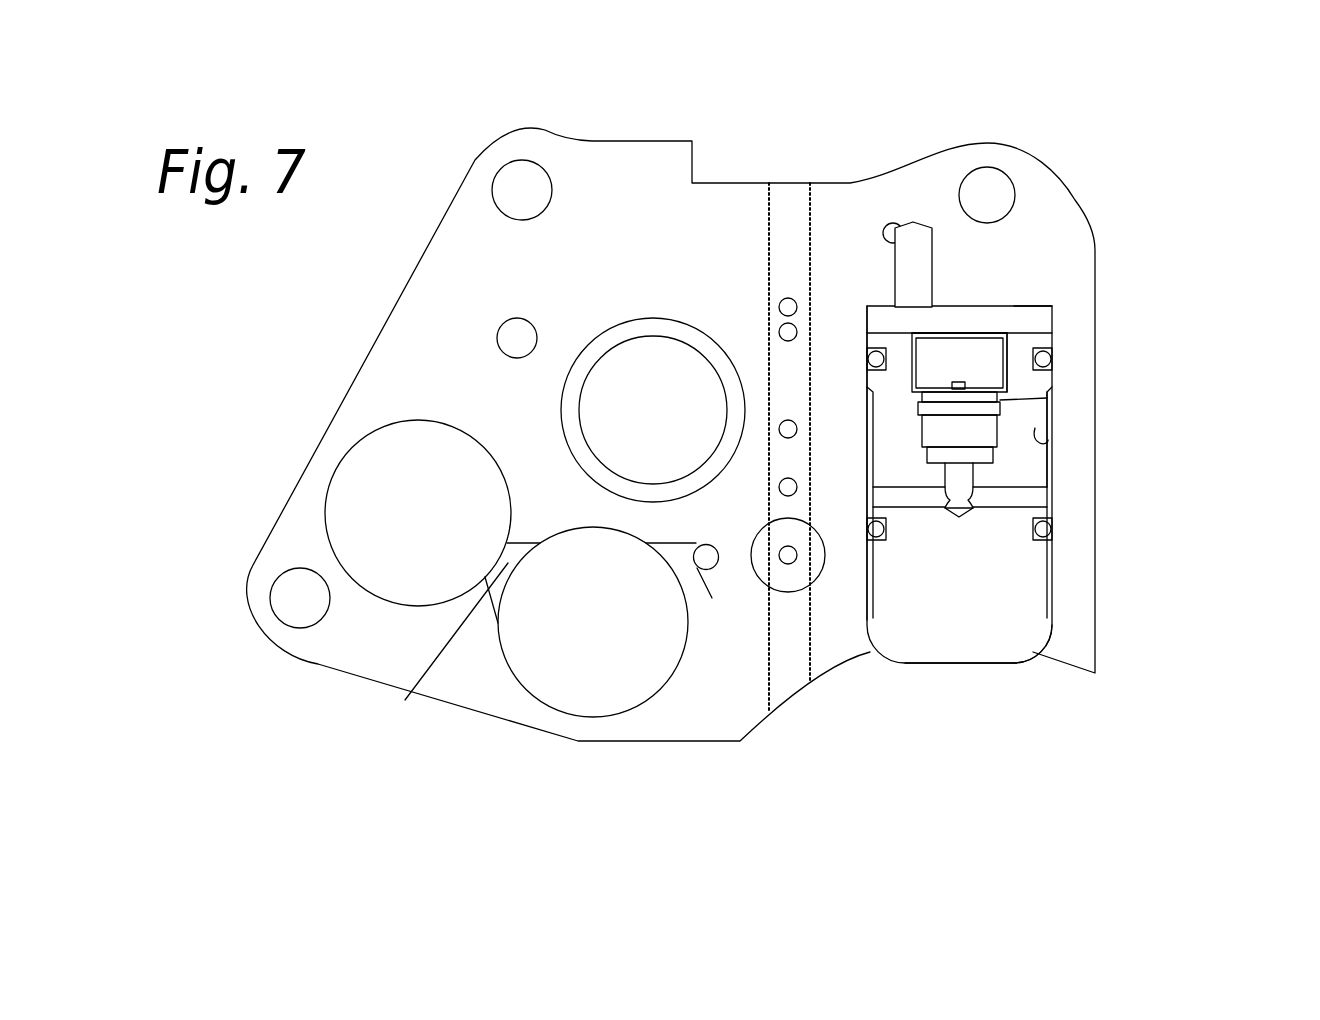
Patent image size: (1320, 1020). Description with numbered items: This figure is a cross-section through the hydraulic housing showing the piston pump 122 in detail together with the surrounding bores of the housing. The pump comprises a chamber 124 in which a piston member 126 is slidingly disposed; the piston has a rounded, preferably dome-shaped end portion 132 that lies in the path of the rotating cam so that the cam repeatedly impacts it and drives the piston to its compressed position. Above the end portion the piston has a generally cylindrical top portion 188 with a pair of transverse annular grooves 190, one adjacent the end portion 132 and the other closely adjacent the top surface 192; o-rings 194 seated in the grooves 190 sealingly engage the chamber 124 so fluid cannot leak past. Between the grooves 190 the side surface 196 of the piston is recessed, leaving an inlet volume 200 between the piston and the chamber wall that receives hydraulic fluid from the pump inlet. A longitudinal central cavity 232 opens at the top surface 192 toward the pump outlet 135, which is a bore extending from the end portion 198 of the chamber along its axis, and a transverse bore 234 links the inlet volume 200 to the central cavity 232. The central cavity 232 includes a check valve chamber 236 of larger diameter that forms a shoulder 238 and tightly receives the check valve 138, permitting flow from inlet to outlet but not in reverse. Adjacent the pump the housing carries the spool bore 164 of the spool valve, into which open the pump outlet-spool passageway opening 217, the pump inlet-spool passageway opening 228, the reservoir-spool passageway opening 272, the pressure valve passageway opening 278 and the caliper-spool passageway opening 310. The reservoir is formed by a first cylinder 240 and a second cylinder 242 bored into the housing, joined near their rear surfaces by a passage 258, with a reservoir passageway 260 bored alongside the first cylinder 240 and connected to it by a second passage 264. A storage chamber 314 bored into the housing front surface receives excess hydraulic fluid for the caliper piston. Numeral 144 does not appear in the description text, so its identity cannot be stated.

The piston pump 122 is at (1042, 688).
The chamber 124 is at (1052, 642).
The piston member 126 is at (882, 630).
The end portion 132 is at (952, 665).
The pump outlet 135 is at (910, 243).
The check valve 138 is at (1000, 332).
The bore 144 is at (636, 423).
The spool bore 164 is at (771, 205).
The top portion 188 is at (1052, 398).
The annular grooves 190 is at (1055, 355).
The top surface 192 is at (1043, 348).
The o-rings 194 is at (1052, 360).
The side surface 196 is at (1035, 428).
The end portion 198 is at (983, 345).
The inlet volume 200 is at (850, 459).
The opening 217 is at (788, 297).
The opening 228 is at (790, 427).
The central cavity 232 is at (980, 433).
The bore 234 is at (1002, 493).
The check valve chamber 236 is at (945, 355).
The shoulder 238 is at (1033, 412).
The first cylinder 240 is at (581, 635).
The second cylinder 242 is at (401, 518).
The passage 258 is at (405, 700).
The reservoir passageway 260 is at (709, 554).
The second passage 264 is at (712, 598).
The opening 272 is at (782, 490).
The opening 278 is at (788, 565).
The opening 310 is at (779, 332).
The storage chamber 314 is at (528, 318).